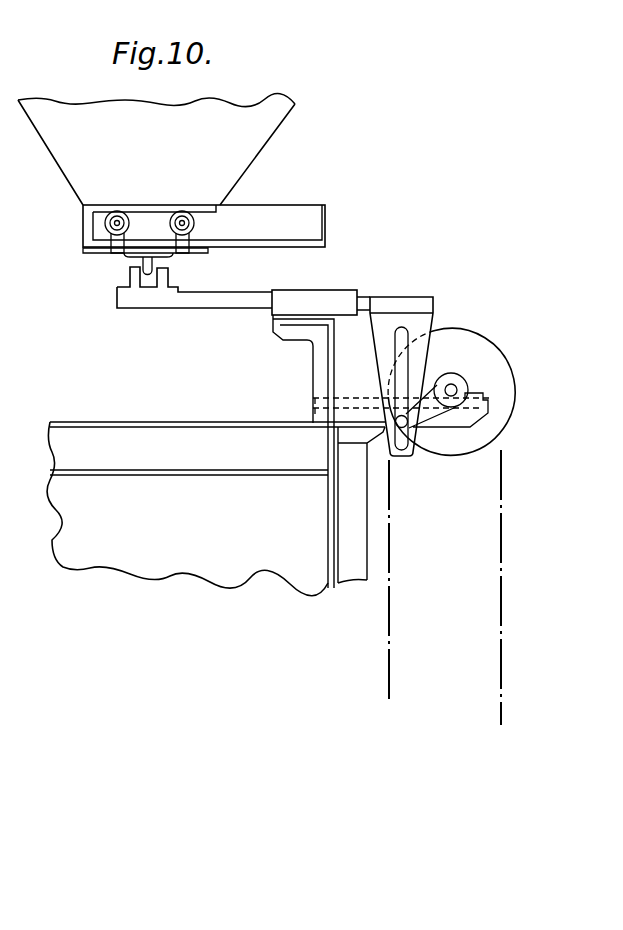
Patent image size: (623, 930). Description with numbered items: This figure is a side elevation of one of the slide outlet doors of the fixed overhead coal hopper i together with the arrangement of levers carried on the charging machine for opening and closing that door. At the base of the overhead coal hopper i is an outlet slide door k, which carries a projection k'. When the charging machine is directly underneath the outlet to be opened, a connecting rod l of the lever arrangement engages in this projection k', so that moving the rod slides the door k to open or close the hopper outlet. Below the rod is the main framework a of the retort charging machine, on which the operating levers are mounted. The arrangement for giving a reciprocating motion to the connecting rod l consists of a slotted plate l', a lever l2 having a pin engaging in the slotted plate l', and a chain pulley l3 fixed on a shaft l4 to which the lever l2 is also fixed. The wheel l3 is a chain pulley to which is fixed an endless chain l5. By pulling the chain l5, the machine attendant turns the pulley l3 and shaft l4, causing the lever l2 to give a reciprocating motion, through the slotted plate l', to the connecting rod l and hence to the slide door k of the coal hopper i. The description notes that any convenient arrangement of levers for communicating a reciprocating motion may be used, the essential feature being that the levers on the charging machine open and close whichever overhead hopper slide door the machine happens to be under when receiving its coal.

The fixed overhead coal hopper i is at (156, 149).
The outlet slide door k is at (130, 264).
The projection k' is at (167, 267).
The connecting rod l is at (243, 306).
The slotted plate l' is at (422, 371).
The lever l2 is at (418, 402).
The chain pulley l3 is at (488, 348).
The shaft l4 is at (468, 386).
The endless chain l5 is at (502, 505).
The main framework a is at (216, 509).